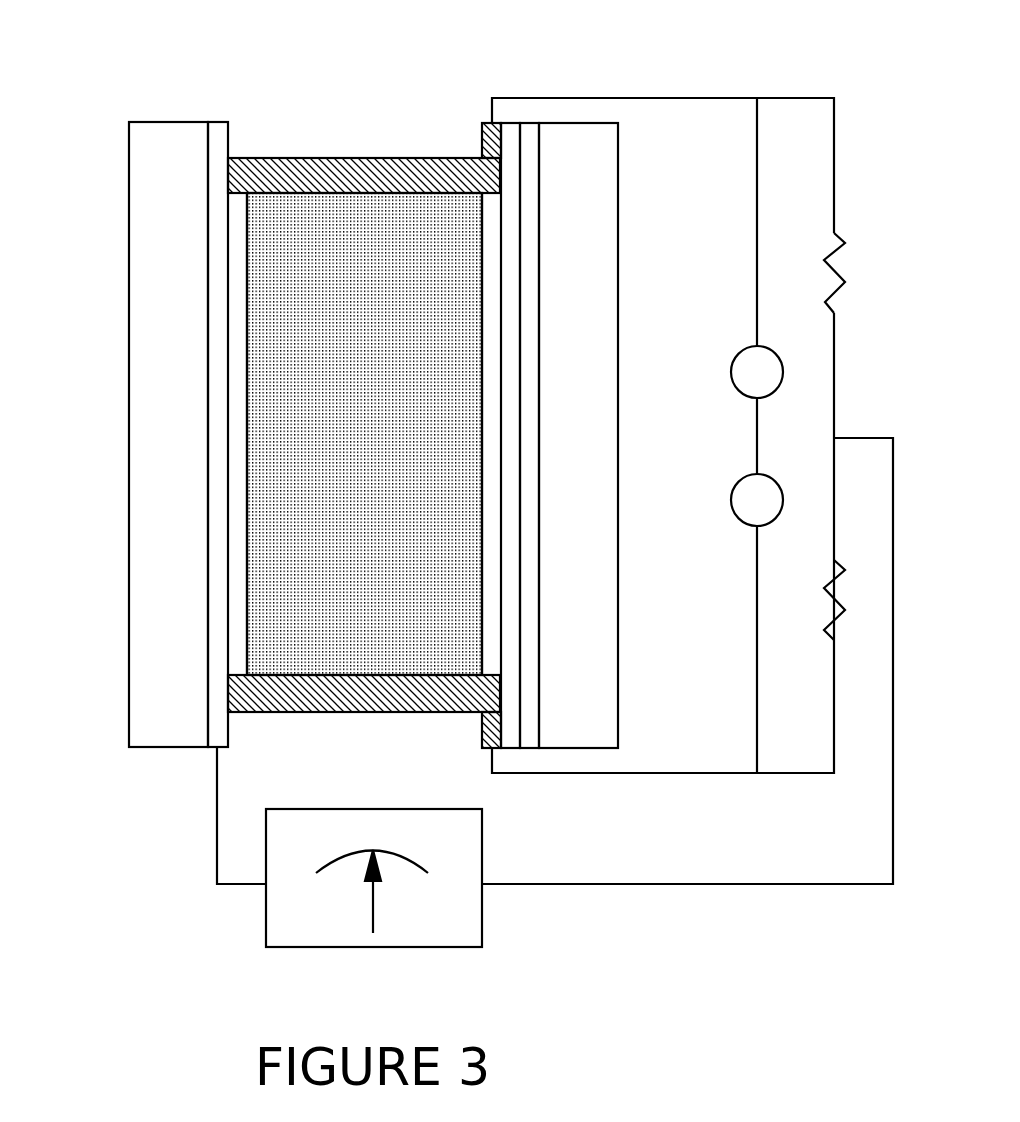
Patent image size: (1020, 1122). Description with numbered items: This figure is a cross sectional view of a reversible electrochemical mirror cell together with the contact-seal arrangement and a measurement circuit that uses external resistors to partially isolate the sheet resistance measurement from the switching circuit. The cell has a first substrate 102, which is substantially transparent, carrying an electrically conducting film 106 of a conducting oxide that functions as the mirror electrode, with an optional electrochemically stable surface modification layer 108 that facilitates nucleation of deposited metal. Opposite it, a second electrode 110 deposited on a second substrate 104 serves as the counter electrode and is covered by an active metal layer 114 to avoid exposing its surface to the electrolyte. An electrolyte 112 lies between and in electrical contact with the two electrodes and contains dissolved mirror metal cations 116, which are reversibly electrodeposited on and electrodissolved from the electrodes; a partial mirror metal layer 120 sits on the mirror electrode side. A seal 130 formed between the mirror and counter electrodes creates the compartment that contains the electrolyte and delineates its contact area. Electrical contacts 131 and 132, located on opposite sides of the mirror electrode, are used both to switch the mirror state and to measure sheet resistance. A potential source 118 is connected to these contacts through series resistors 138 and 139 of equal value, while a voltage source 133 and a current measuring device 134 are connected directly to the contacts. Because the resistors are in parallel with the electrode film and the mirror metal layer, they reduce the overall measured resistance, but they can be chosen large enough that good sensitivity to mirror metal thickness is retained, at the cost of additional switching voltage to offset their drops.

The first substrate 102 is at (588, 237).
The second substrate 104 is at (157, 507).
The electrically conducting film 106 is at (533, 128).
The surface modification layer 108 is at (508, 128).
The second electrode 110 is at (218, 130).
The electrolyte 112 is at (258, 332).
The active metal layer 114 is at (237, 263).
The mirror metal cations 116 is at (300, 443).
The potential source 118 is at (277, 907).
The mirror metal layer 120 is at (490, 578).
The seal 130 is at (366, 178).
The electrical contact 131 is at (482, 727).
The electrical contact 132 is at (487, 143).
The voltage source 133 is at (733, 358).
The current measuring device 134 is at (731, 507).
The series resistor 138 is at (828, 253).
The series resistor 139 is at (828, 597).